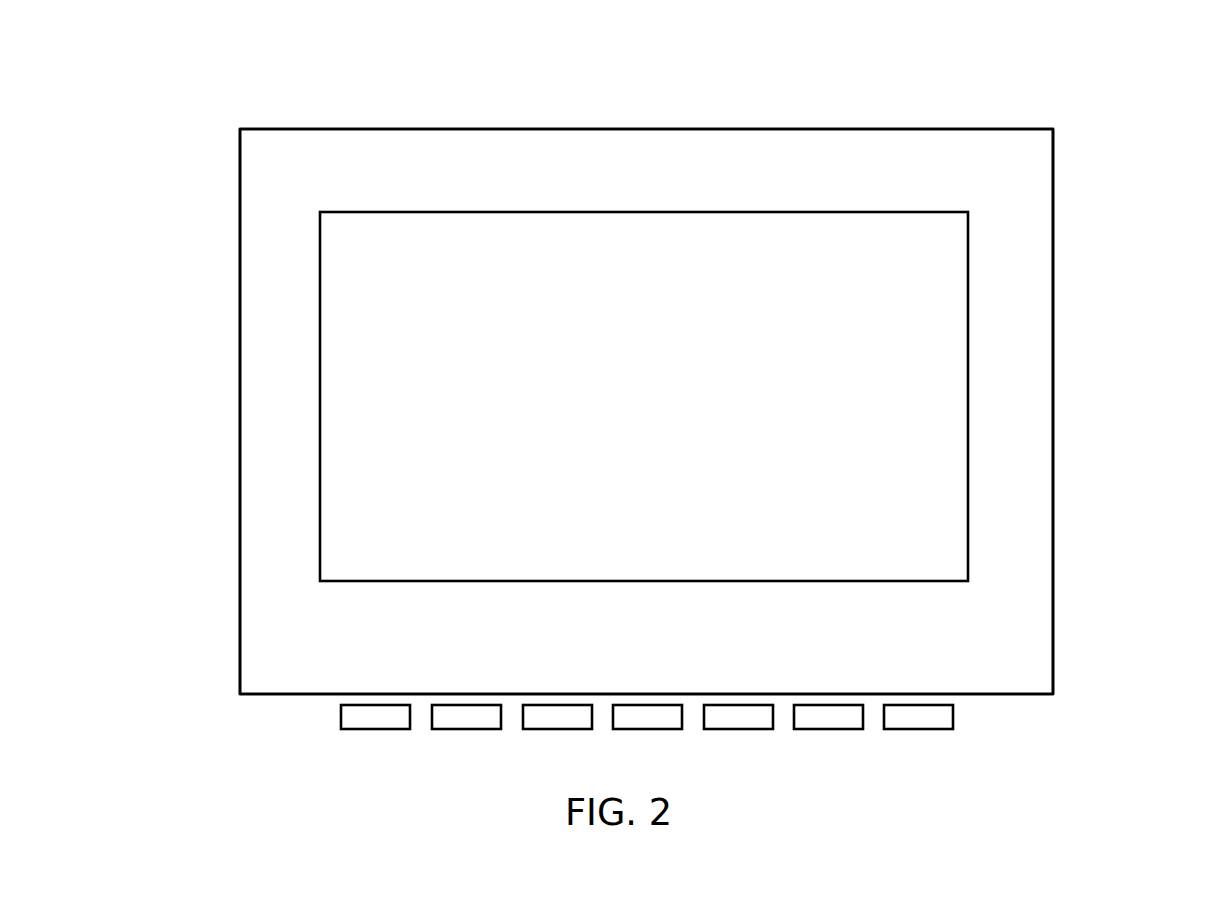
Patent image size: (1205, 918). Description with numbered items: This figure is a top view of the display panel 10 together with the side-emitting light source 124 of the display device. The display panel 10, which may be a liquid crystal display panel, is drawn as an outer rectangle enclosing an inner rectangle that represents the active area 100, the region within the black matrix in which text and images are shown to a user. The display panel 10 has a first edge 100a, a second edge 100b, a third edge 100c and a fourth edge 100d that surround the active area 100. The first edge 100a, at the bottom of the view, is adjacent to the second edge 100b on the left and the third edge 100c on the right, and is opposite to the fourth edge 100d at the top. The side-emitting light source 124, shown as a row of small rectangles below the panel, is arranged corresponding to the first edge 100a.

The display panel 10 is at (1078, 117).
The active area 100 is at (670, 432).
The first edge 100a is at (695, 695).
The second edge 100b is at (240, 413).
The third edge 100c is at (1053, 413).
The fourth edge 100d is at (648, 129).
The side-emitting light source 124 is at (341, 720).